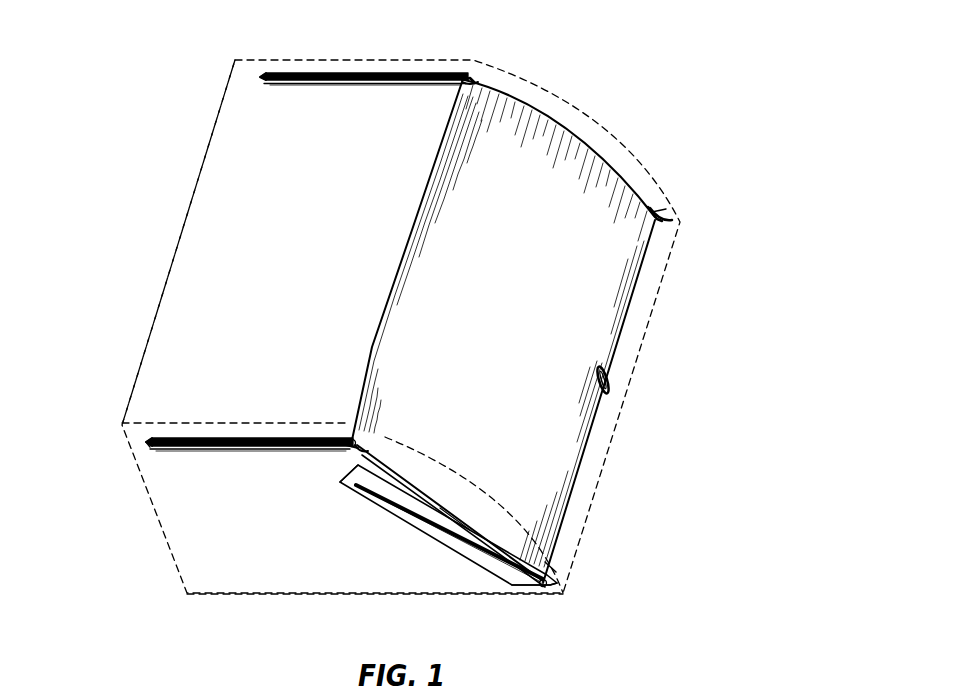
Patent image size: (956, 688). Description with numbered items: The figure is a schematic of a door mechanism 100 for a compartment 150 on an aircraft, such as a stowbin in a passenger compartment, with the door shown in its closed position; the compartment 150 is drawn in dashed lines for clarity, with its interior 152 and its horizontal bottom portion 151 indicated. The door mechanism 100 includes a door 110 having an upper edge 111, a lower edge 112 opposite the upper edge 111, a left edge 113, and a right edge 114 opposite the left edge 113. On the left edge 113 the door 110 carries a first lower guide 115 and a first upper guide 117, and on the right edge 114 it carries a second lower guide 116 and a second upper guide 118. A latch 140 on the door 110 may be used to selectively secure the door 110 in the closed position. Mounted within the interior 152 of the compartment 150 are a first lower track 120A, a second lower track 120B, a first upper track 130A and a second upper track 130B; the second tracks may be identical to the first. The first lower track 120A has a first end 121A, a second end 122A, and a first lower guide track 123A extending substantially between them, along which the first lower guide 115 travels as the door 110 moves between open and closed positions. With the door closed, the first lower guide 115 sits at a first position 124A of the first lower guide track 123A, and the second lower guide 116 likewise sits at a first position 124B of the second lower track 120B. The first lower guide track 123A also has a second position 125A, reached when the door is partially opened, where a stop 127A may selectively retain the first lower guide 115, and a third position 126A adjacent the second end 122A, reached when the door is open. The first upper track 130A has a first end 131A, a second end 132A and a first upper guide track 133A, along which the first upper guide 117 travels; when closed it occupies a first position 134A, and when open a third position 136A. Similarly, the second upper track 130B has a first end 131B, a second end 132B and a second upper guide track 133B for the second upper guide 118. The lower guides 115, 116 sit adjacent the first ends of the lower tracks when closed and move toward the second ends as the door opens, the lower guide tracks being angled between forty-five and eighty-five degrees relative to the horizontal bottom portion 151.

The door mechanism 100 is at (756, 68).
The door 110 is at (507, 315).
The upper edge 111 is at (423, 188).
The lower edge 112 is at (642, 277).
The left edge 113 is at (387, 487).
The right edge 114 is at (563, 128).
The first lower guide 115 is at (545, 587).
The second lower guide 116 is at (660, 200).
The first upper guide 117 is at (362, 435).
The second upper guide 118 is at (467, 76).
The first lower track 120A is at (473, 555).
The second lower track 120B is at (660, 218).
The first end 121A is at (530, 585).
The second end 122A is at (358, 467).
The first lower guide track 123A is at (397, 507).
The first position 124A is at (550, 571).
The first position 124B is at (663, 202).
The second position 125A is at (455, 520).
The third position 126A is at (428, 523).
The stop 127A is at (447, 537).
The first upper track 130A is at (268, 438).
The second upper track 130B is at (288, 74).
The first end 131A is at (373, 442).
The first end 131B is at (473, 80).
The second end 132A is at (152, 438).
The second end 132B is at (262, 79).
The first upper guide track 133A is at (300, 438).
The second upper guide track 133B is at (367, 79).
The first position 134A is at (348, 447).
The third position 136A is at (153, 450).
The latch 140 is at (608, 372).
The compartment 150 is at (202, 177).
The horizontal bottom portion 151 is at (273, 595).
The interior 152 is at (282, 283).